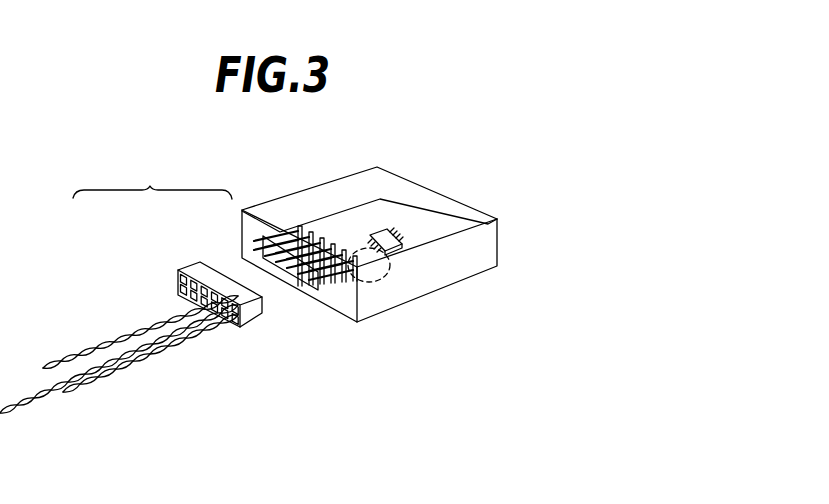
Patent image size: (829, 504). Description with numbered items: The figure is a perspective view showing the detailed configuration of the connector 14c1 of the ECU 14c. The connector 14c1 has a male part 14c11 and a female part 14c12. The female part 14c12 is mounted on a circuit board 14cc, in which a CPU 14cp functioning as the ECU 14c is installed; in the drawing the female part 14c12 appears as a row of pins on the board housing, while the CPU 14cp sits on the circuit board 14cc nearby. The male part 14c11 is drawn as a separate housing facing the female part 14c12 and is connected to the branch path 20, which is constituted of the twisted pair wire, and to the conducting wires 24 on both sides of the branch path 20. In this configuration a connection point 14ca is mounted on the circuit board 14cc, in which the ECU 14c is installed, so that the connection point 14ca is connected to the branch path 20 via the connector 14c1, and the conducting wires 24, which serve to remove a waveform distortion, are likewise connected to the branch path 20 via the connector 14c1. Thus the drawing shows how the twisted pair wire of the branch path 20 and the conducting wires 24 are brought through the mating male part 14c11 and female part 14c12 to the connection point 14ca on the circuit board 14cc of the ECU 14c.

The connector 14c1 is at (152, 177).
The male part 14c11 is at (167, 273).
The female part 14c12 is at (252, 233).
The circuit board 14cc is at (433, 232).
The CPU 14cp is at (445, 289).
The ECU 14c is at (387, 256).
The connection point 14ca is at (372, 282).
The conducting wires 24 is at (145, 330).
The branch path 20 is at (119, 362).